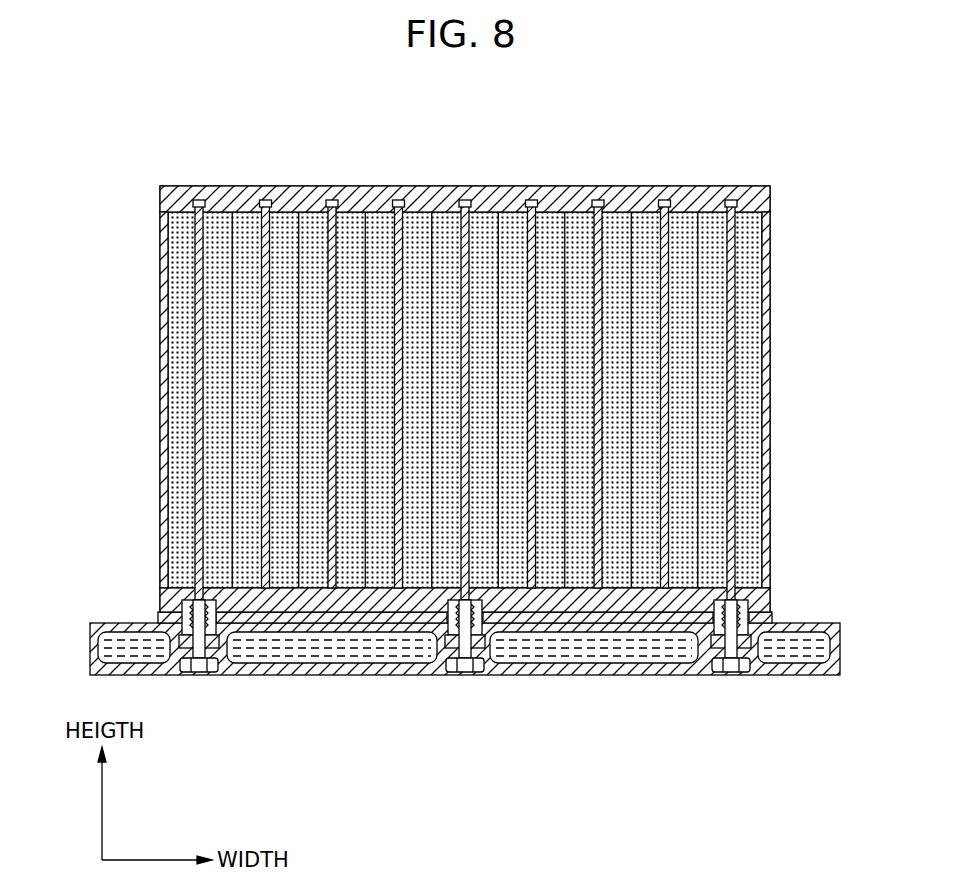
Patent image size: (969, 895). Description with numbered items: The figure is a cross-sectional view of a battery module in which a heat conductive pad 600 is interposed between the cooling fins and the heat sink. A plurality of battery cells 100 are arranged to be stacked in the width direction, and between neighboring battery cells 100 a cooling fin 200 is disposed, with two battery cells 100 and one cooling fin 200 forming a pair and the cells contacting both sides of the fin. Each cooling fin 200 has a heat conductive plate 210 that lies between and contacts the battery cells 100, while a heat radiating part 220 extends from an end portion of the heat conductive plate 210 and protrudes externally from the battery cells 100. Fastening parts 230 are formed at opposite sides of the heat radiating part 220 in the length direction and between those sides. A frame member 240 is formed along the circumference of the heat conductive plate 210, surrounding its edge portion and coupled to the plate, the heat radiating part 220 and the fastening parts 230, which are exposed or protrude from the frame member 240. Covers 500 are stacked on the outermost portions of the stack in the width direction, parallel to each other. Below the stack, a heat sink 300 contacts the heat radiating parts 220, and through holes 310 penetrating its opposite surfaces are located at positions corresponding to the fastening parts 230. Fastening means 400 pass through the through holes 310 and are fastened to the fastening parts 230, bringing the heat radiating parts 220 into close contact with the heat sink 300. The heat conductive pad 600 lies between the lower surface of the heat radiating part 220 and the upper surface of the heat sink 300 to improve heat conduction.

The battery cell 100 is at (306, 200).
The cooling fin 200 is at (205, 186).
The heat conductive plate 210 is at (382, 200).
The heat radiating part 220 is at (492, 630).
The fastening part 230 is at (441, 632).
The frame member 240 is at (437, 603).
The heat sink 300 is at (668, 675).
The through hole 310 is at (472, 650).
The fastening means 400 is at (463, 668).
The cover 500 is at (160, 208).
The heat conductive pad 600 is at (768, 622).